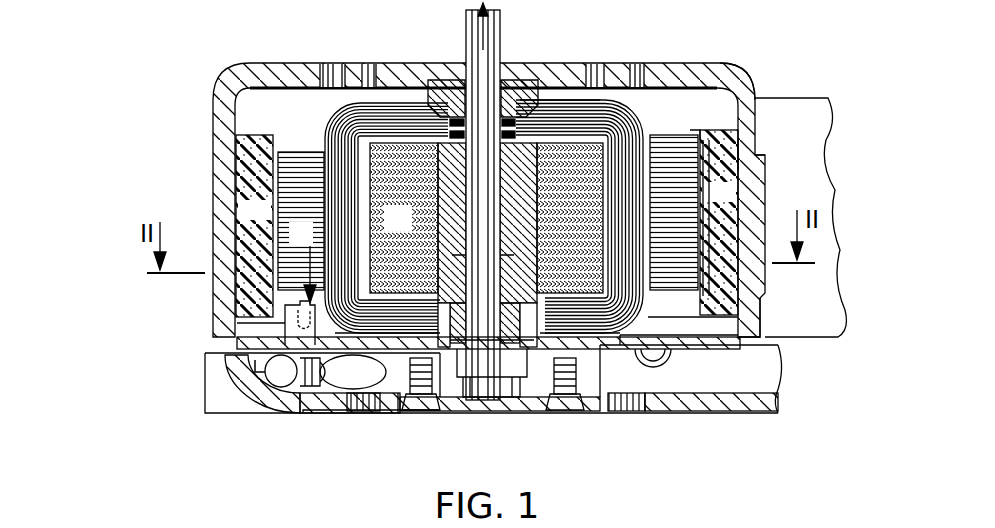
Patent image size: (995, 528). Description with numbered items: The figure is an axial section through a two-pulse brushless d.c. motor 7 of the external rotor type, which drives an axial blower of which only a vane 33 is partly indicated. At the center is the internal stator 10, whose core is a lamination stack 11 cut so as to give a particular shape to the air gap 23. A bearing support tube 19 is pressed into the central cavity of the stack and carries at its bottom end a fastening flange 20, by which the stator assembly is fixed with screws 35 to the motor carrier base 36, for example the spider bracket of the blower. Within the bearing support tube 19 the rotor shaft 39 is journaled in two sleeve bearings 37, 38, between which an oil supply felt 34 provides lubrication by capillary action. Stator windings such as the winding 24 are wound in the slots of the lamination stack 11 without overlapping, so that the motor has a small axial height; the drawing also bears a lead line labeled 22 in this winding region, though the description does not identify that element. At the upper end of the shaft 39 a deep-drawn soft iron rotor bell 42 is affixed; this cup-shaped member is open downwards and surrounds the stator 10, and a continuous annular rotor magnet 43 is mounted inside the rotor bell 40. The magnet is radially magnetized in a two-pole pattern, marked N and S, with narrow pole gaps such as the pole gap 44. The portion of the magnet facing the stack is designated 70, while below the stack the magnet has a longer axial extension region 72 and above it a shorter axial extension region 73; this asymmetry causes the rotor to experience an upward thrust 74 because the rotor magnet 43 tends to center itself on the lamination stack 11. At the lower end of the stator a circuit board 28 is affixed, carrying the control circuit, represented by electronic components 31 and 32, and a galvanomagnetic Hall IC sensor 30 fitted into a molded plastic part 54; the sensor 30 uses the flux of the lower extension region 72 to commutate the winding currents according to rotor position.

The brushless d.c. motor 7 is at (173, 61).
The upward thrust 74 is at (480, 30).
The sleeve bearing 37 is at (510, 128).
The stator winding 24 is at (577, 110).
The coil end turn 22 is at (598, 142).
The internal stator 10 is at (655, 133).
The rotor bell 42 is at (740, 72).
The rotor bell 40 is at (762, 116).
The vane 33 is at (812, 106).
The axial extension region 73 is at (694, 133).
The rotor magnet 43 is at (745, 155).
The portion of the rotor magnet opposite the stator lamination stack 70 is at (742, 176).
The bearing support tube 19 is at (440, 172).
The lamination stack 11 is at (387, 230).
The rotor shaft 39 is at (476, 226).
The oil supply felt 34 is at (524, 262).
The air gap 23 is at (235, 178).
The pole gap 44 is at (756, 322).
The axial extension region 72 is at (698, 292).
The sensor 30 is at (283, 325).
The molded plastic part 54 is at (237, 342).
The circuit board 28 is at (619, 346).
The motor carrier base 36 is at (257, 400).
The electronic component 31 is at (282, 385).
The electronic component 32 is at (338, 385).
The fastening flange 20 is at (407, 392).
The screws 35 is at (437, 365).
The sleeve bearing 38 is at (530, 372).